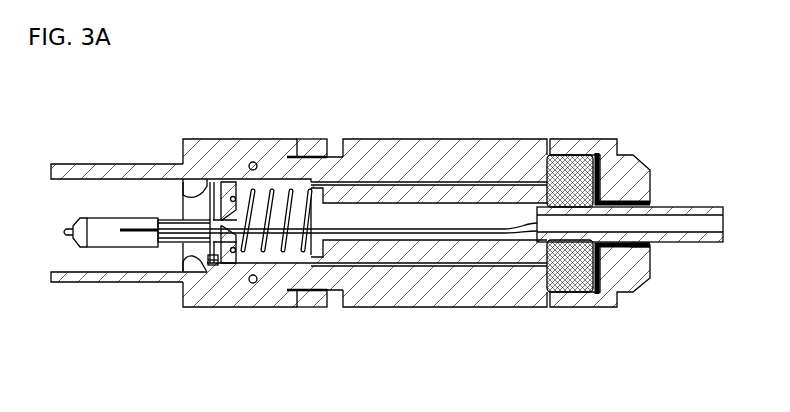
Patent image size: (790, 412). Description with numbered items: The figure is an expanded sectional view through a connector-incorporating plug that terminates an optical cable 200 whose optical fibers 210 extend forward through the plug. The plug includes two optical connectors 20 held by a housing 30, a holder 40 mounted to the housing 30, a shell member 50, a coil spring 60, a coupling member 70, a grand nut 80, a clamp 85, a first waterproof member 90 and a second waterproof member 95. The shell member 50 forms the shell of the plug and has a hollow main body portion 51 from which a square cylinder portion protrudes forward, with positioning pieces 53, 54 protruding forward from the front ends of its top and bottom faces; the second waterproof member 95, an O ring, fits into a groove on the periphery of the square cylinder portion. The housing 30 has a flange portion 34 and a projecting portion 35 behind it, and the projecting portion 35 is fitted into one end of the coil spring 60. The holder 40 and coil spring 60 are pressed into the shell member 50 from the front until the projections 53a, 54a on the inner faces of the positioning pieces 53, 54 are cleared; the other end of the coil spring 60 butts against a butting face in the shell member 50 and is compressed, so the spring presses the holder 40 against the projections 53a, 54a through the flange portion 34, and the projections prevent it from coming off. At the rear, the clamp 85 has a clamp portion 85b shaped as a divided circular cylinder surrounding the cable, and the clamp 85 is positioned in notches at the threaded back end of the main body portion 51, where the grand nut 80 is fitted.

The optical connector 20 is at (95, 215).
The housing 30 is at (167, 220).
The flange portion 34 is at (222, 187).
The projecting portion 35 is at (230, 193).
The holder 40 is at (213, 265).
The shell member 50 is at (507, 139).
The main body portion 51 is at (443, 307).
The positioning piece 53 is at (75, 163).
The projection 53a is at (182, 190).
The positioning piece 54 is at (70, 283).
The projection 54a is at (193, 258).
The coil spring 60 is at (282, 253).
The coupling member 70 is at (317, 140).
The grand nut 80 is at (635, 158).
The clamp 85 is at (597, 300).
The clamp portion 85b is at (650, 242).
The first waterproof member 90 is at (563, 290).
The second waterproof member 95 is at (255, 163).
The optical cable 200 is at (693, 207).
The optical fibers 210 is at (432, 228).